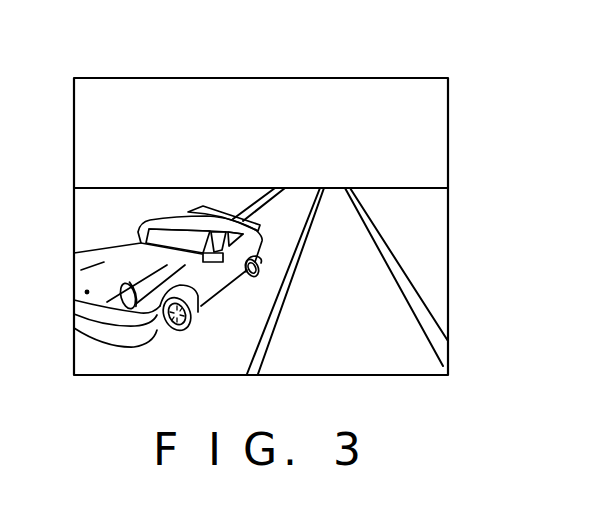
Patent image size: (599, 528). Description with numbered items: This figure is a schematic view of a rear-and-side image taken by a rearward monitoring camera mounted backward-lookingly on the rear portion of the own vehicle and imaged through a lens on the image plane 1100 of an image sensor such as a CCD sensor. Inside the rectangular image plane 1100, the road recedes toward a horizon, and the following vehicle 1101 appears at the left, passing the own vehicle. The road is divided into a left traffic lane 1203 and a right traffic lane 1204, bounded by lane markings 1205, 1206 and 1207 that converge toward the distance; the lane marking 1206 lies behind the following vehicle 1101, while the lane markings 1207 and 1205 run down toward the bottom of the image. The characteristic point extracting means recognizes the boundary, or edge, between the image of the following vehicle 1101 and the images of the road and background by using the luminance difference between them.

The image plane 1100 is at (230, 77).
The following vehicle 1101 is at (160, 218).
The left traffic lane 1203 is at (367, 262).
The right traffic lane 1204 is at (303, 200).
The lane marking 1205 is at (365, 208).
The lane marking 1206 is at (275, 188).
The lane marking 1207 is at (318, 188).